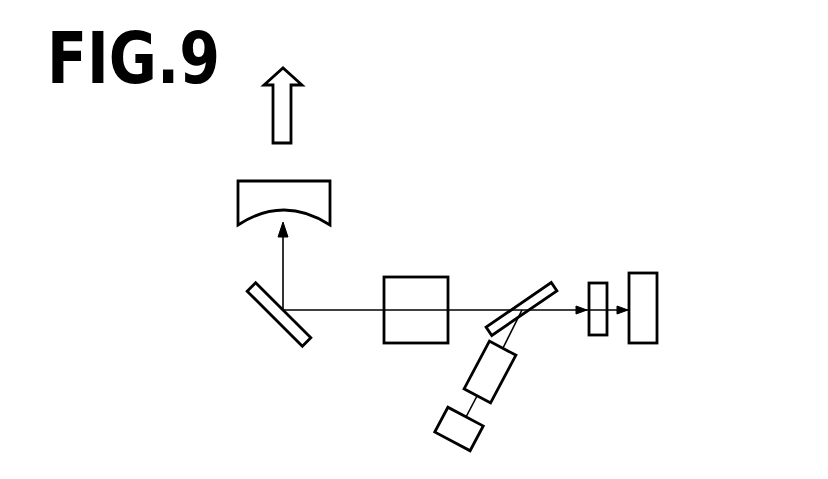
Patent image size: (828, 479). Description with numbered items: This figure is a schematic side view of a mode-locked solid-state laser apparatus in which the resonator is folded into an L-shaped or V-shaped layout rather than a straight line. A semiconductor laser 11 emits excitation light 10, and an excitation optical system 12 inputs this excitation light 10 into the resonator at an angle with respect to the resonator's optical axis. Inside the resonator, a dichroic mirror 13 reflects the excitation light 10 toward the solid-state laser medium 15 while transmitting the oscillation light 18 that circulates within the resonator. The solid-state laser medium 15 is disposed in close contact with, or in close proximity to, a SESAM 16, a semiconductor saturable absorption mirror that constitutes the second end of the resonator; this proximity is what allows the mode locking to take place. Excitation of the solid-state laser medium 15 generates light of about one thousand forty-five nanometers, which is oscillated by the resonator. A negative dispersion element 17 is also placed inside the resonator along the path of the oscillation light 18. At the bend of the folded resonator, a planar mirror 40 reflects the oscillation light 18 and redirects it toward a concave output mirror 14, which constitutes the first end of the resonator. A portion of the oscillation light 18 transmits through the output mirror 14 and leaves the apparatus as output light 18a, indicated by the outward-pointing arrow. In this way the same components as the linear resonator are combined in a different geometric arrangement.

The excitation light 10 is at (552, 312).
The semiconductor laser 11 is at (437, 428).
The excitation optical system 12 is at (463, 378).
The dichroic mirror 13 is at (523, 301).
The concave output mirror 14 is at (237, 202).
The solid-state laser medium 15 is at (595, 282).
The SESAM 16 is at (645, 273).
The negative dispersion element 17 is at (403, 277).
The oscillation light 18 is at (284, 270).
The output light 18a is at (291, 115).
The planar mirror 40 is at (291, 342).